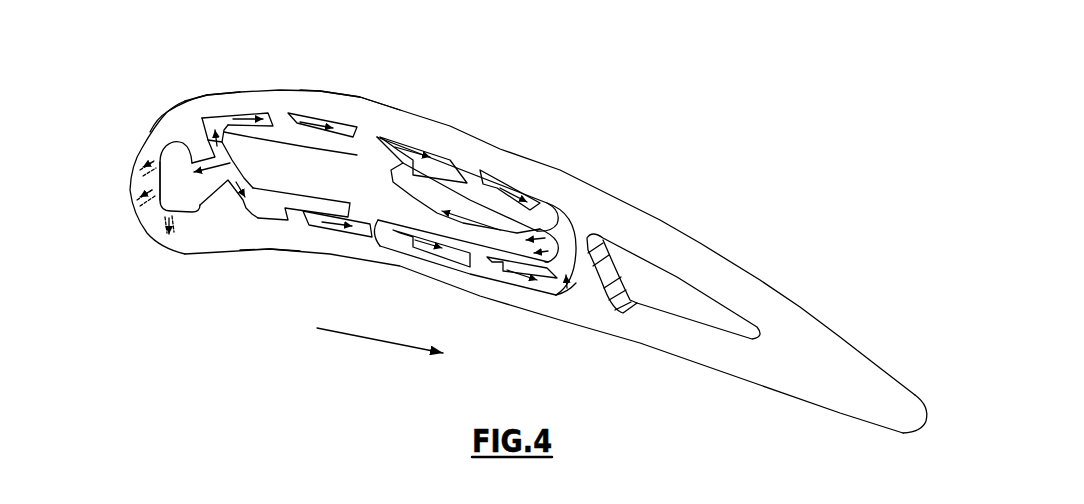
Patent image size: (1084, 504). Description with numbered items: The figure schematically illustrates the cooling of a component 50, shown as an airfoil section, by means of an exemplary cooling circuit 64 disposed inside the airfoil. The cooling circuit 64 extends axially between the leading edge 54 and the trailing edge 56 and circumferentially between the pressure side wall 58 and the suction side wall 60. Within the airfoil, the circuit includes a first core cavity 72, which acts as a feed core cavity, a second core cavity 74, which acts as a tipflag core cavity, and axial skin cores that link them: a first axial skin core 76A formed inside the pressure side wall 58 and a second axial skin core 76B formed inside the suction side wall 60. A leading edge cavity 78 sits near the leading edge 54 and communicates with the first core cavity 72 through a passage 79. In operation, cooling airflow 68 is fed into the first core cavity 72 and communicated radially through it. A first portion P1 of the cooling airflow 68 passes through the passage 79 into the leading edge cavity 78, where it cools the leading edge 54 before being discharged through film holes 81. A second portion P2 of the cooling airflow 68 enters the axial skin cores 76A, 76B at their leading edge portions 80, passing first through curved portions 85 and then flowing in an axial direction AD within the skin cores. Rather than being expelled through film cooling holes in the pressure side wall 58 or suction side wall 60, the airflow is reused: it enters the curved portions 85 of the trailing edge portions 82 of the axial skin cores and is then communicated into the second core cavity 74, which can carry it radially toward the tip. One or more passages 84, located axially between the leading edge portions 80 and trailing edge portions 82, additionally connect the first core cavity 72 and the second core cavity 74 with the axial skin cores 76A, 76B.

The component 50 is at (516, 109).
The leading edge 54 is at (131, 228).
The trailing edge 56 is at (905, 432).
The pressure side wall 58 is at (557, 305).
The suction side wall 60 is at (584, 181).
The cooling circuit 64 is at (350, 107).
The cooling airflow 68 is at (243, 112).
The first core cavity 72 is at (303, 182).
The second core cavity 74 is at (465, 272).
The first axial skin core 76A is at (333, 237).
The second axial skin core 76B is at (295, 112).
The leading edge cavity 78 is at (194, 216).
The passage 79 is at (164, 114).
The leading edge portions 80 is at (205, 91).
The film holes 81 is at (137, 148).
The trailing edge portions 82 is at (549, 191).
The passages 84 is at (387, 145).
The curved portions 85 is at (203, 114).
The first portion of the cooling airflow P1 is at (208, 190).
The second portion of the cooling airflow P2 is at (235, 148).
The axial direction AD is at (374, 342).